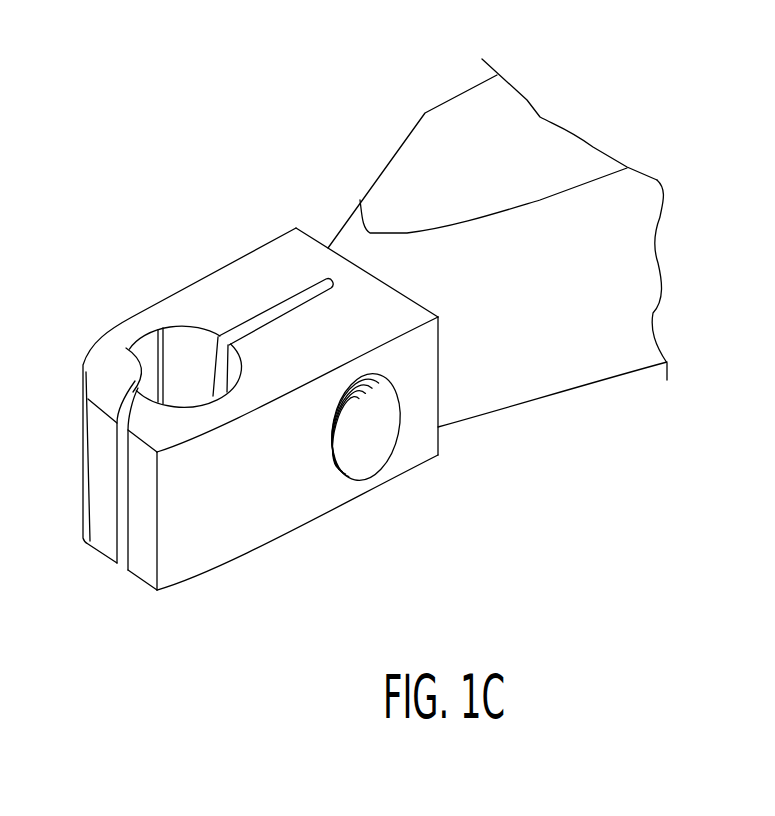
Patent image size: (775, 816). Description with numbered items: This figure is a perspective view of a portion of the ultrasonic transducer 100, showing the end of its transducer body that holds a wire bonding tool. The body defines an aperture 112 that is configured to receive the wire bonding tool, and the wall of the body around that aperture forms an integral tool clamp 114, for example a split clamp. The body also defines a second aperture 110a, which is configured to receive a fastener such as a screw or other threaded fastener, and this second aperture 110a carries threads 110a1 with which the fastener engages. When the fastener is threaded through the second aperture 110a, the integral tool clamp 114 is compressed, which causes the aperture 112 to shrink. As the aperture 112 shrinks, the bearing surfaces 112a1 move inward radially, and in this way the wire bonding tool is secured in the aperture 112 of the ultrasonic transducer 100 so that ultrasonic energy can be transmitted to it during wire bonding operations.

The ultrasonic transducer 100 is at (467, 113).
The aperture 112 is at (138, 333).
The bearing surfaces 112a1 is at (188, 327).
The integral tool clamp 114 is at (263, 312).
The second aperture 110a is at (367, 467).
The threads 110a1 is at (385, 423).